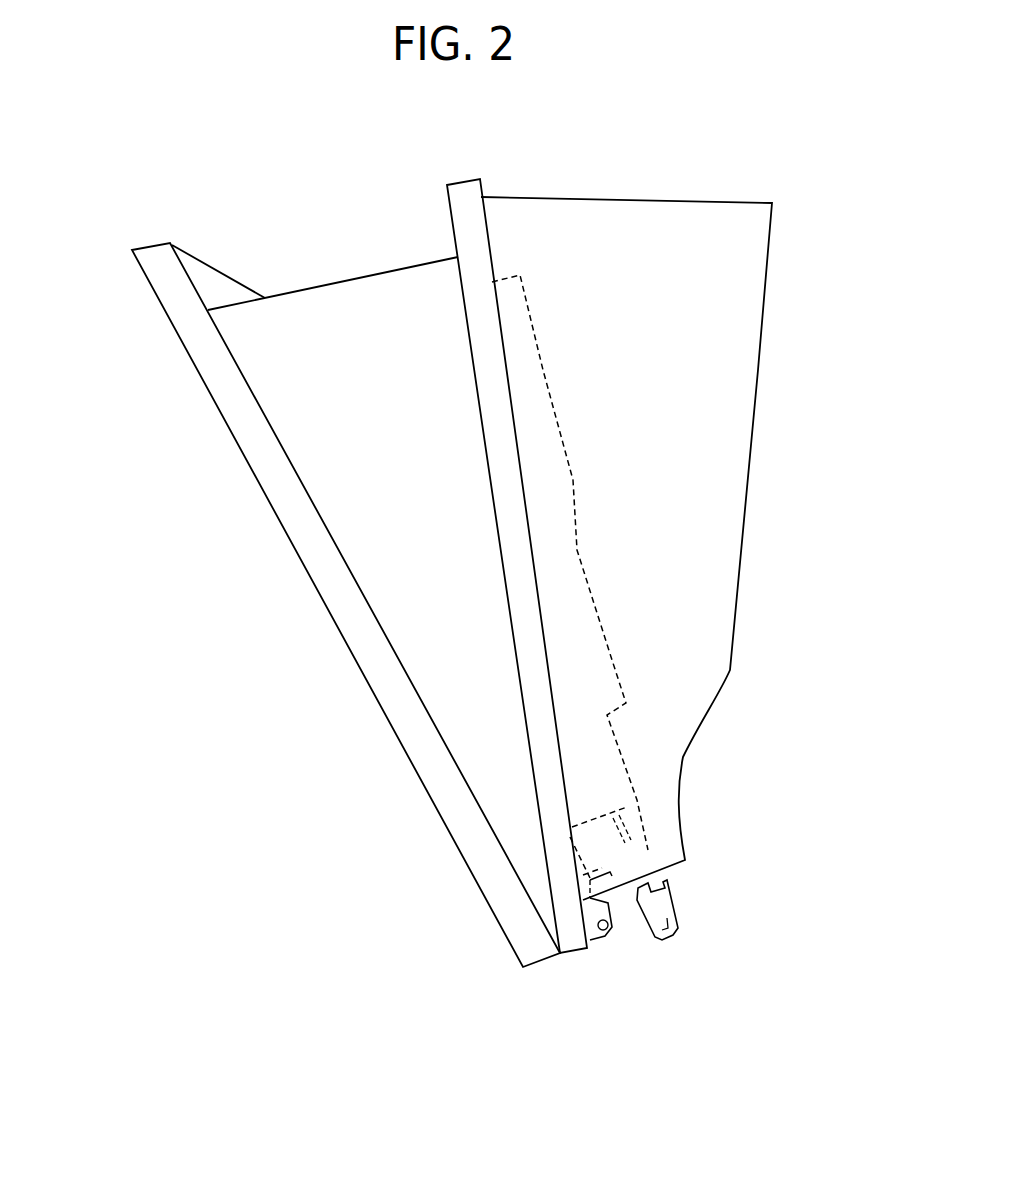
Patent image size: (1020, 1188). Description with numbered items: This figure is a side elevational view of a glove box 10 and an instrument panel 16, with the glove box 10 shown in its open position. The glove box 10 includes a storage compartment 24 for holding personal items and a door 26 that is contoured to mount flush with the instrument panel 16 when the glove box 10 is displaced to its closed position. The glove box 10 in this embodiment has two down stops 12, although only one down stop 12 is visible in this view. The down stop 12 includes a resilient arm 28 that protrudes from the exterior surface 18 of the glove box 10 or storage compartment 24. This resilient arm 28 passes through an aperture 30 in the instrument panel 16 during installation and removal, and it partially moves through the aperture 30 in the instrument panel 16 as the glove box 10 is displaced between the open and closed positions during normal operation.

The glove box 10 is at (153, 370).
The down stop 12 is at (652, 855).
The instrument panel 16 is at (758, 371).
The exterior surface 18 is at (660, 822).
The storage compartment 24 is at (320, 285).
The door 26 is at (273, 512).
The resilient arm 28 is at (672, 900).
The aperture 30 is at (628, 905).